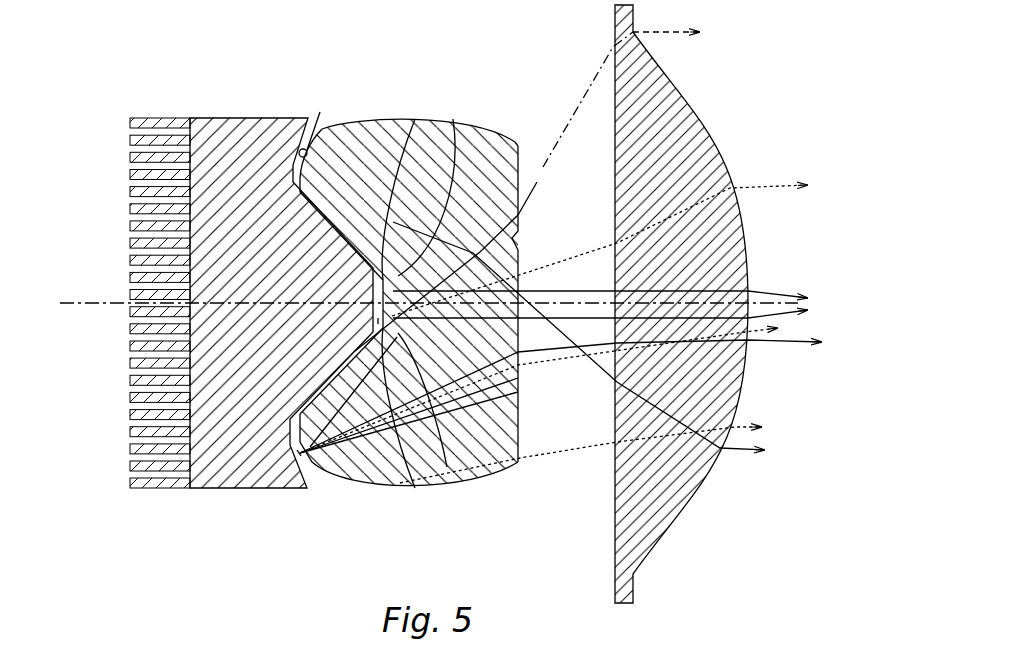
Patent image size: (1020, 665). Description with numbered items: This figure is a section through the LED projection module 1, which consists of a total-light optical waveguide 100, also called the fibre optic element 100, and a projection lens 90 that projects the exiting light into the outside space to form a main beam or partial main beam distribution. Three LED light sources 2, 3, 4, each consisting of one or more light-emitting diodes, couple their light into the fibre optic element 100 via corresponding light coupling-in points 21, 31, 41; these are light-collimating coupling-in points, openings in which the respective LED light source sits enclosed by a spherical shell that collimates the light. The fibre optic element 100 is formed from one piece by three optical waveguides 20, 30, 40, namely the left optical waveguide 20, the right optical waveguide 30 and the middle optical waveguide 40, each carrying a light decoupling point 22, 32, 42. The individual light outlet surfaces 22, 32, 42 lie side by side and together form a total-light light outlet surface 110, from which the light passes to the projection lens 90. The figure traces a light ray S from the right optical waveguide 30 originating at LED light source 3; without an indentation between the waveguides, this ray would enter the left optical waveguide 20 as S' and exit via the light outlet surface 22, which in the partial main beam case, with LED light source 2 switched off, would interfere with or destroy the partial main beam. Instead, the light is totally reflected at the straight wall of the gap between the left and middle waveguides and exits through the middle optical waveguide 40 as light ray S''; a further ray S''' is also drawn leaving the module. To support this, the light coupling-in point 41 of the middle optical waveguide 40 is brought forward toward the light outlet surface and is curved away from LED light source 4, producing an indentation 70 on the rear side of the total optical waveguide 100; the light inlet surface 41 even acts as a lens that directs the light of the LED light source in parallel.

The LED projection module 1 is at (722, 72).
The LED light source 2 is at (307, 148).
The LED light source 3 is at (303, 460).
The LED light source 4 is at (427, 427).
The optical waveguide 20 is at (472, 125).
The light coupling-in point 21 is at (326, 128).
The light decoupling point 22 is at (520, 181).
The optical waveguide 30 is at (407, 474).
The light coupling-in point 31 is at (340, 470).
The light decoupling point 32 is at (540, 462).
The optical waveguide 40 is at (486, 250).
The light coupling-in point 41 is at (415, 119).
The light decoupling point 42 is at (540, 322).
The indentation 70 is at (453, 119).
The projection lens 90 is at (746, 393).
The total-light optical waveguide 100 is at (515, 478).
The total-light light outlet surface 110 is at (531, 158).
The light ray S is at (561, 443).
The light ray S' is at (581, 266).
The light ray S'' is at (579, 336).
The light ray S''' is at (581, 461).